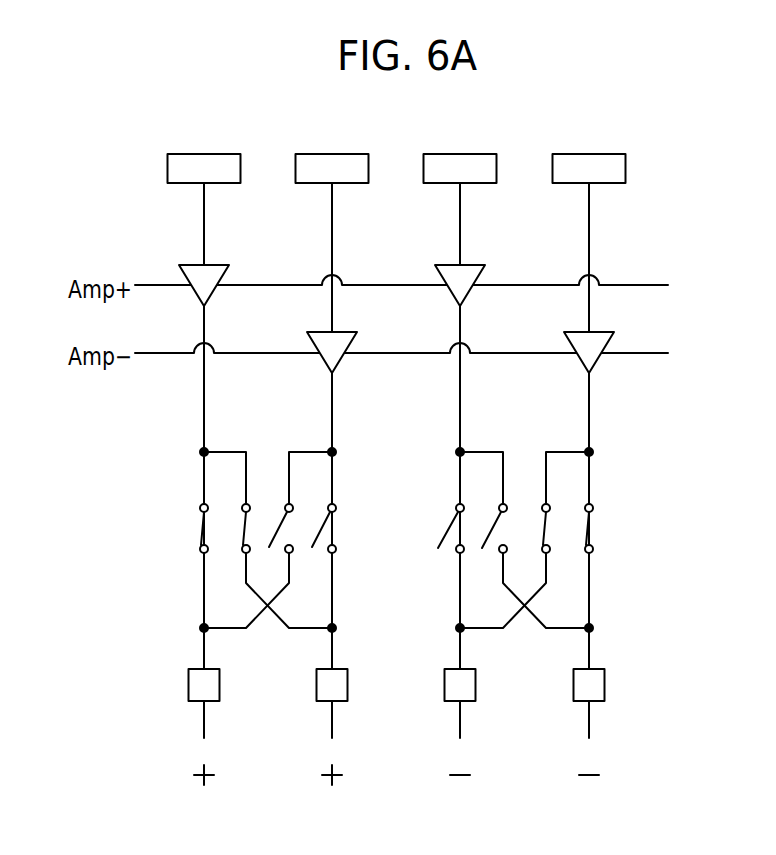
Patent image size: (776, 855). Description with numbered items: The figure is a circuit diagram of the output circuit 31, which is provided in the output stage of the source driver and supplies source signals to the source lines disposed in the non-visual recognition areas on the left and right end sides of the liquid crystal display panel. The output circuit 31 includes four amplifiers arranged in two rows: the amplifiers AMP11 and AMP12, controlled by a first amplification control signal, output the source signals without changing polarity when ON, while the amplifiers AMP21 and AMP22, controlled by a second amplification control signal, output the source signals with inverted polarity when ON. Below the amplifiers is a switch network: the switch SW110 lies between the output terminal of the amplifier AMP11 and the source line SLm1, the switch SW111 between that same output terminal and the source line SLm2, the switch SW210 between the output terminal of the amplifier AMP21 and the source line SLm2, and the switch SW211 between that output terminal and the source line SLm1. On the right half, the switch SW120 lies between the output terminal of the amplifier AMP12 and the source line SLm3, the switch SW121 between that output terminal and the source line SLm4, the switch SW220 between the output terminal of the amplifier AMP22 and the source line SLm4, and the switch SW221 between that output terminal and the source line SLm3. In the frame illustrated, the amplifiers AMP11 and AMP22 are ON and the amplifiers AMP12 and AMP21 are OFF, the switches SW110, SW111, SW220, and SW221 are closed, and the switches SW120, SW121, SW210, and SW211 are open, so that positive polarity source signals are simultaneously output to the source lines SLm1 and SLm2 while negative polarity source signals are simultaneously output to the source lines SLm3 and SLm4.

The output circuit 31 is at (665, 181).
The amplifier AMP11 is at (195, 263).
The amplifier AMP12 is at (444, 265).
The amplifier AMP21 is at (342, 362).
The amplifier AMP22 is at (580, 362).
The switch SW110 is at (200, 529).
The switch SW111 is at (243, 526).
The switch SW210 is at (323, 519).
The switch SW211 is at (283, 518).
The switch SW120 is at (454, 522).
The switch SW121 is at (497, 520).
The switch SW220 is at (588, 529).
The switch SW221 is at (548, 528).
The source line SLm1 is at (203, 722).
The source line SLm2 is at (331, 722).
The source line SLm3 is at (459, 722).
The source line SLm4 is at (588, 722).